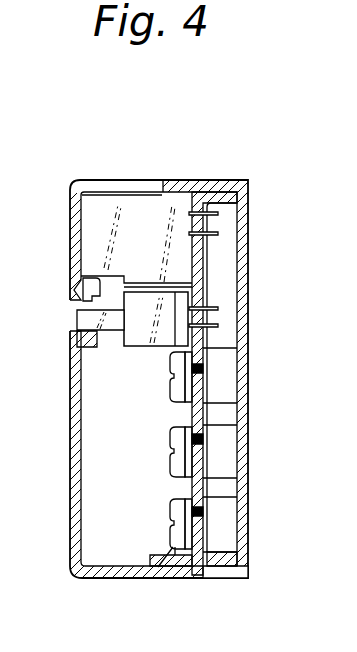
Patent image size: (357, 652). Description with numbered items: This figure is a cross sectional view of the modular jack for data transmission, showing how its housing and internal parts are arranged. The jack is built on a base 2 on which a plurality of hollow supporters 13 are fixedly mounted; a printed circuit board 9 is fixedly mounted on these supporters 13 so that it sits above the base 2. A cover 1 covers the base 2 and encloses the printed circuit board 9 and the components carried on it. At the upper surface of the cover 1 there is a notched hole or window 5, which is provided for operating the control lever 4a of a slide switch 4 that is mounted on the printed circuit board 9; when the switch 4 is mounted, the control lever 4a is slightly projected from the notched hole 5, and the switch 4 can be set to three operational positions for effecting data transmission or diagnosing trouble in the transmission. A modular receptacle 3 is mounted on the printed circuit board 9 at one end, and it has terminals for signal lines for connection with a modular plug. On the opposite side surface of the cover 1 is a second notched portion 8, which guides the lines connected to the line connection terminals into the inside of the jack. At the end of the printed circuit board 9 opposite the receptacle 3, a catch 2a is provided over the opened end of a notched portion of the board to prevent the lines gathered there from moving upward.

The cover 1 is at (70, 226).
The base 2 is at (246, 252).
The catch 2a is at (162, 580).
The modular receptacle 3 is at (117, 208).
The slide switch 4 is at (132, 346).
The control lever 4a is at (77, 318).
The notched hole or window 5 is at (75, 302).
The second notched portion 8 is at (202, 578).
The printed circuit board 9 is at (204, 294).
The hollow supporters 13 is at (244, 379).